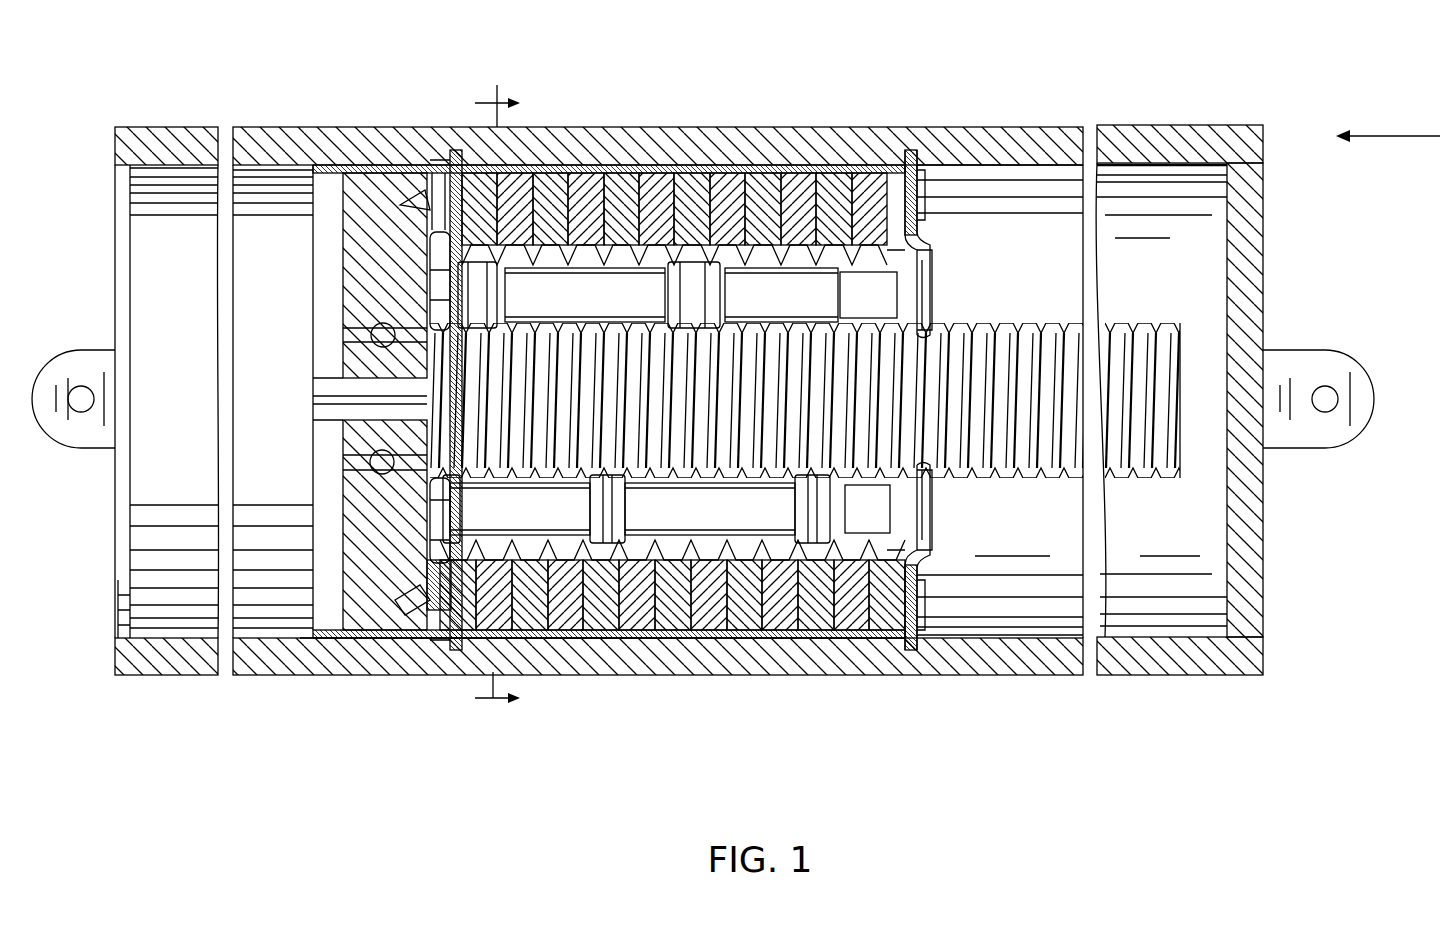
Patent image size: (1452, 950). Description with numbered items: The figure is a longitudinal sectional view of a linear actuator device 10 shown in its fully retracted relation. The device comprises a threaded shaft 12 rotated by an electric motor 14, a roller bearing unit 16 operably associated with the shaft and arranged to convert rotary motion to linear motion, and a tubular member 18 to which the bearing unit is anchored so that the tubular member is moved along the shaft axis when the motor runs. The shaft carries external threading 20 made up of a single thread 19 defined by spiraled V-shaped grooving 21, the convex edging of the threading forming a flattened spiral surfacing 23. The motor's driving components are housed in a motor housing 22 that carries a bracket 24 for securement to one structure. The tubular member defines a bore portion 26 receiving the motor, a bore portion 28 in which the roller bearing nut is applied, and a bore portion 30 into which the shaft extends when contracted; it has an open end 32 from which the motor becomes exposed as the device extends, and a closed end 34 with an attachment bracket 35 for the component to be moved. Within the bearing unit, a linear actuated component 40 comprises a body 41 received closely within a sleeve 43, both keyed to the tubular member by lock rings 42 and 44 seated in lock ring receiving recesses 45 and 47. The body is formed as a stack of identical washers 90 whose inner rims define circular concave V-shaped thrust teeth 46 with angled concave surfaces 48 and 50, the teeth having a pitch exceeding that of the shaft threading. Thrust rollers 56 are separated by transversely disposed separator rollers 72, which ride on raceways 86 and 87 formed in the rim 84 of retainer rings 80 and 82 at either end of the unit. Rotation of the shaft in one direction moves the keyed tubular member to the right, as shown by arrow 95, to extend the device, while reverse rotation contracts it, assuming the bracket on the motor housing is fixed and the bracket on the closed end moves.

The linear actuator device 10 is at (925, 73).
The threaded shaft 12 is at (1189, 299).
The electric motor 14 is at (178, 191).
The roller bearing unit 16 is at (694, 127).
The tubular member 18 is at (161, 684).
The single thread 19 is at (1124, 482).
The external threading 20 is at (1158, 486).
The V-shaped grooving 21 is at (1043, 478).
The motor housing 22 is at (252, 430).
The flattened spiral surfacing 23 is at (1110, 333).
The bracket 24 is at (60, 362).
The bore portion 26 is at (270, 630).
The bore portion 28 is at (560, 672).
The bore portion 30 is at (1180, 167).
The open end 32 is at (118, 578).
The closed end 34 is at (1237, 660).
The attachment bracket 35 is at (1355, 397).
The linear actuated component 40 is at (553, 197).
The body 41 is at (458, 590).
The lock ring 42 is at (452, 150).
The sleeve 43 is at (737, 672).
The lock ring 44 is at (922, 165).
The lock ring receiving recess 45 is at (432, 150).
The thrust teeth 46 is at (595, 270).
The lock ring receiving recess 47 is at (908, 150).
The angled circularly concave surface 48 is at (858, 560).
The angled circularly concave surface 50 is at (900, 268).
The thrust rollers 56 is at (618, 600).
The separator rollers 72 is at (895, 310).
The retainer ring 80 is at (428, 565).
The retainer ring 82 is at (925, 238).
The rim 84 is at (440, 240).
The raceway 86 is at (440, 265).
The raceway 87 is at (928, 270).
The washers 90 is at (626, 165).
The arrow 95 is at (1393, 136).